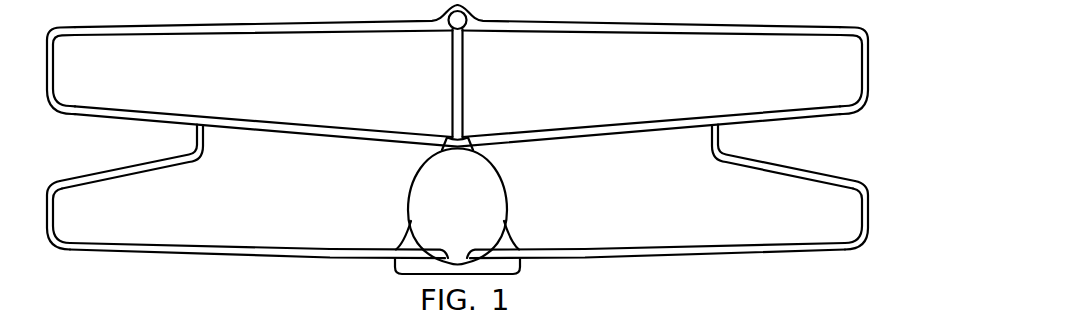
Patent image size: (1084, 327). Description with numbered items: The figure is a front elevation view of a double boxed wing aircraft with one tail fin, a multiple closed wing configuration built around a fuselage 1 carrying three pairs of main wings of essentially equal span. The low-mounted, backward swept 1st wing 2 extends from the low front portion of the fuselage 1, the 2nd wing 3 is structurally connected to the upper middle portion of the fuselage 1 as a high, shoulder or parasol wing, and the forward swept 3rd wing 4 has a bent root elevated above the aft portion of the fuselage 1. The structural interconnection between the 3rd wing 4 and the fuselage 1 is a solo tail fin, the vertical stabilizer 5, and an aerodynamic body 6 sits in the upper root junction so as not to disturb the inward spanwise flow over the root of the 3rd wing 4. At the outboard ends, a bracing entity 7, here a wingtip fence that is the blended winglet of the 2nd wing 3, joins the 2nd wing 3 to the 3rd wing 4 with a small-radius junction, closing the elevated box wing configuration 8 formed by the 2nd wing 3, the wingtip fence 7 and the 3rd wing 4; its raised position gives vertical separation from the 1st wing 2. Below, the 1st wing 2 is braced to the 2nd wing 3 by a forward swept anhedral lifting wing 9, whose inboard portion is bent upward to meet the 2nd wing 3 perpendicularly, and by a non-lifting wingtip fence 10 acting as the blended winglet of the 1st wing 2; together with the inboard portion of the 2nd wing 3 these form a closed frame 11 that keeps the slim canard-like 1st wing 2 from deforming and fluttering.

The fuselage 1 is at (427, 203).
The 1st wing 2 is at (650, 252).
The 2nd wing 3 is at (595, 132).
The 3rd wing 4 is at (651, 22).
The vertical stabilizer 5 is at (457, 88).
The aerodynamic body 6 is at (454, 25).
The bracing entity (wingtip fence) 7 is at (863, 60).
The box wing configuration 8 is at (499, 76).
The bracing entity (forward swept anhedral lifting wing) 9 is at (757, 163).
The bracing entity (wingtip fence) 10 is at (862, 204).
The closed frame 11 is at (505, 192).